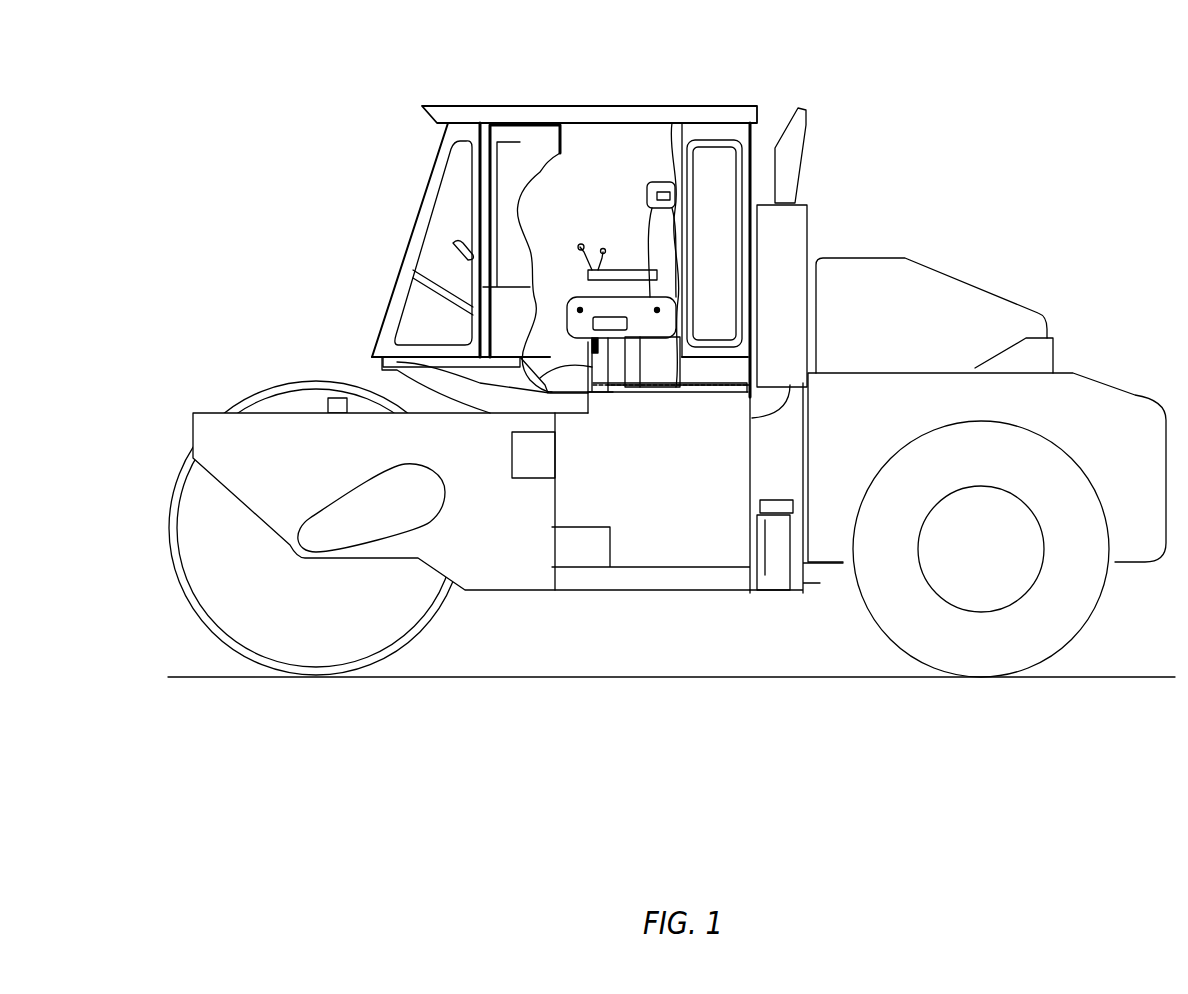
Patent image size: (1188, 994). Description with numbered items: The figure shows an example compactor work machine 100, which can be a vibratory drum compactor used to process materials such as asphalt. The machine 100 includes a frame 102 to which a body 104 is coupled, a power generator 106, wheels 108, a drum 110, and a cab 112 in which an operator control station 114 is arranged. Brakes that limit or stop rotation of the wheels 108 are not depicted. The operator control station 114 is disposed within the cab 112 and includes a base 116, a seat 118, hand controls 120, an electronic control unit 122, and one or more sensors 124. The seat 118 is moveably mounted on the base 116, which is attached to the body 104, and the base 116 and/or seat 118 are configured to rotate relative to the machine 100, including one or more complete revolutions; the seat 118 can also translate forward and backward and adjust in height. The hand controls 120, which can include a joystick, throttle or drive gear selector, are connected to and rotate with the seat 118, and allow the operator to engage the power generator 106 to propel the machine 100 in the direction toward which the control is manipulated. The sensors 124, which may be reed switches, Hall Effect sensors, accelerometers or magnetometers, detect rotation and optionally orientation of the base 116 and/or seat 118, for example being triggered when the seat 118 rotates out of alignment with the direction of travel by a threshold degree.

The compactor work machine 100 is at (508, 42).
The frame 102 is at (657, 593).
The body 104 is at (1098, 381).
The power generator 106 is at (934, 272).
The wheels 108 is at (977, 668).
The drum 110 is at (293, 383).
The cab 112 is at (627, 108).
The operator control station 114 is at (540, 200).
The base 116 is at (627, 367).
The seat 118 is at (663, 288).
The hand controls 120 is at (603, 257).
The electronic control unit 122 is at (597, 347).
The sensor 124 is at (548, 378).